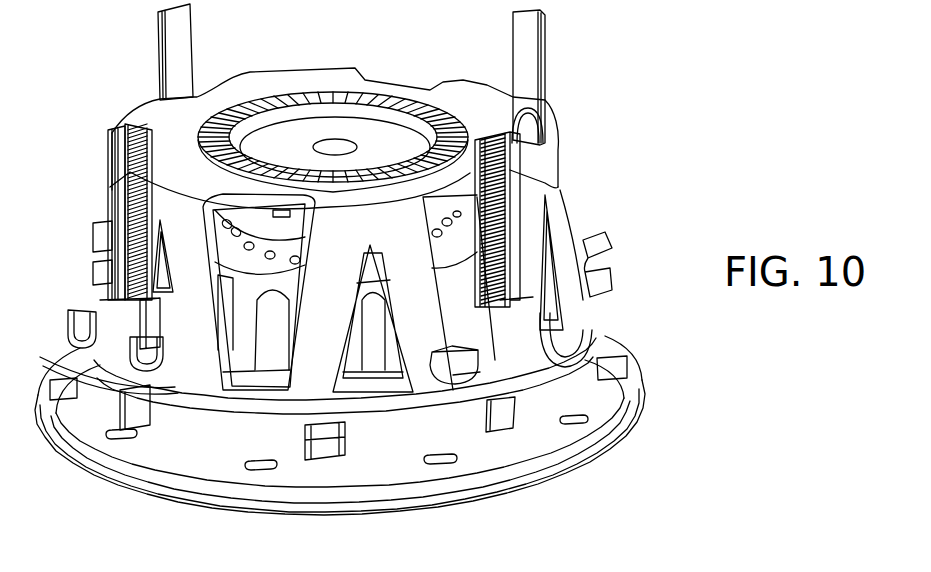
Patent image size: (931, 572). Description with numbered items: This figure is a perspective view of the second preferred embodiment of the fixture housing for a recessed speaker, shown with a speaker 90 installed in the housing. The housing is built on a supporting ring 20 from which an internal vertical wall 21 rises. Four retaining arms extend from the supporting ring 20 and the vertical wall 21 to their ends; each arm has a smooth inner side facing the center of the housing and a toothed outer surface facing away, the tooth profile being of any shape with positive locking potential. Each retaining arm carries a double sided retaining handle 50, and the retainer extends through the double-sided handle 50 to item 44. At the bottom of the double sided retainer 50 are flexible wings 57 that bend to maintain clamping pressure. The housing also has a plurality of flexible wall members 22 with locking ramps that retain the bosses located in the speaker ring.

The supporting ring 20 is at (643, 405).
The internal vertical wall 21 is at (200, 451).
The flexible wall member 22 is at (345, 448).
The item 44 is at (513, 155).
The double sided retaining handle 50 is at (580, 350).
The flexible wings 57 is at (363, 0).
The speaker 90 is at (296, 70).